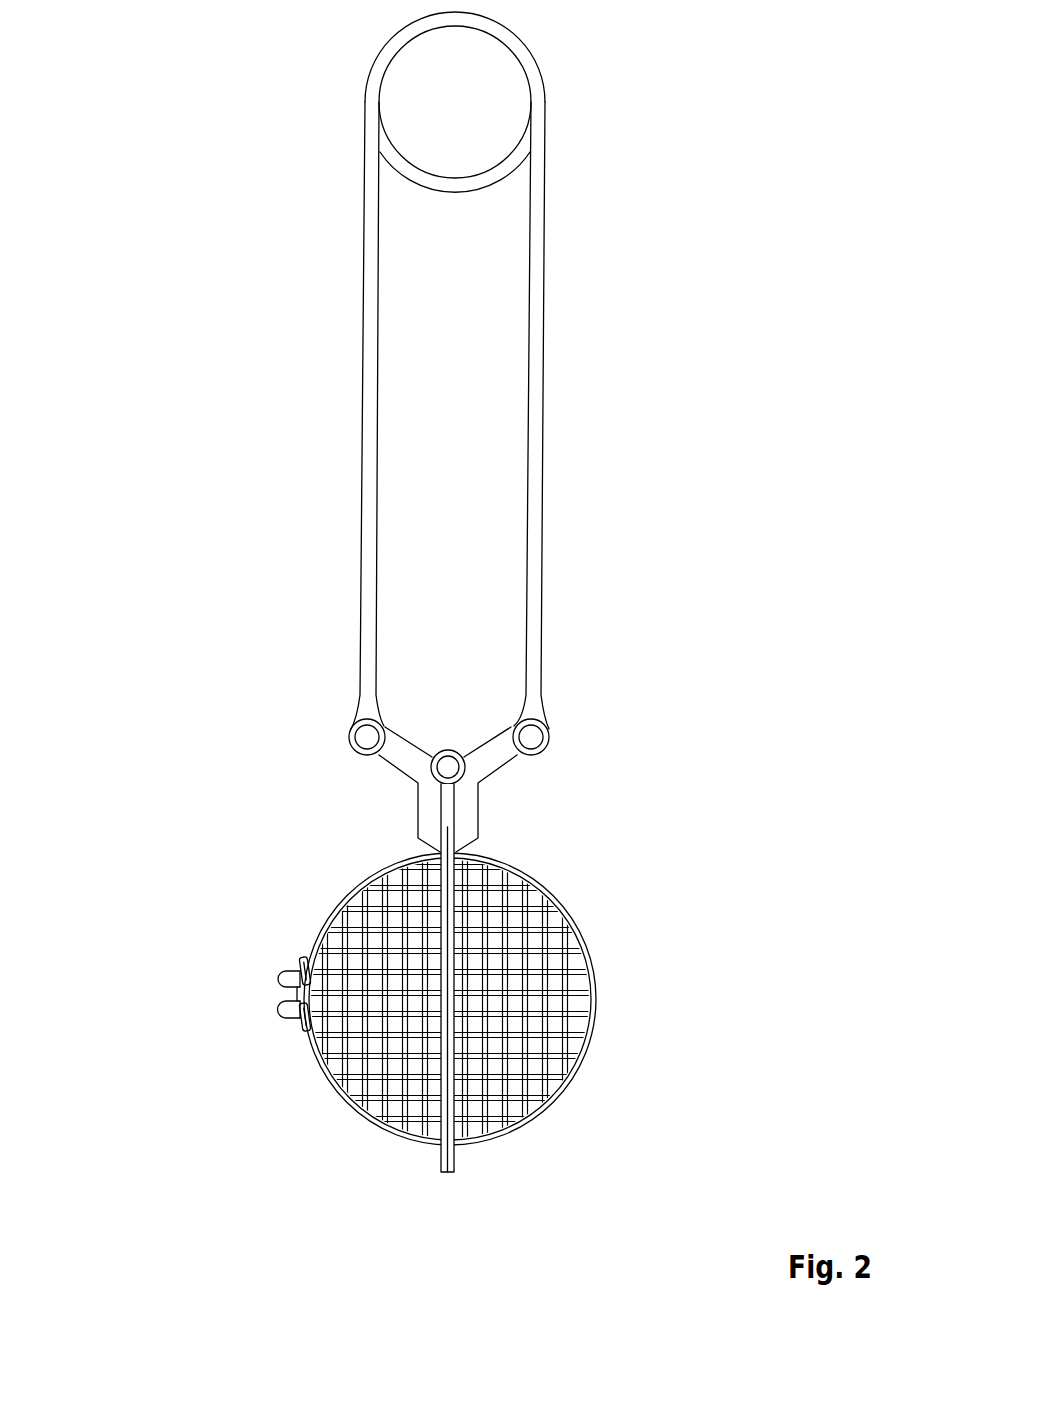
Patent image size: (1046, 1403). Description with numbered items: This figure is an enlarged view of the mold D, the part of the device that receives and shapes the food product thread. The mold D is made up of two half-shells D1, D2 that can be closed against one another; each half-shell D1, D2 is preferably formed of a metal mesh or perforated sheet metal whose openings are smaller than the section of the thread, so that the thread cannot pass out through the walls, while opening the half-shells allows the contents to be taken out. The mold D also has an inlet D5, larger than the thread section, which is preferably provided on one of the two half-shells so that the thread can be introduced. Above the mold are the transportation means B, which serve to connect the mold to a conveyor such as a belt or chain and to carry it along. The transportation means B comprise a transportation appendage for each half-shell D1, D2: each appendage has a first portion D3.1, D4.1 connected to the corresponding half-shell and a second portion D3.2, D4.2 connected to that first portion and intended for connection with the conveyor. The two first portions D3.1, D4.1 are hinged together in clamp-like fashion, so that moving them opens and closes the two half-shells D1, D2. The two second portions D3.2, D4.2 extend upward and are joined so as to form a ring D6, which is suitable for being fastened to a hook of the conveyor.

The transportation means B is at (560, 674).
The mold D is at (521, 1159).
The half-shell D1 is at (415, 1136).
The half-shell D2 is at (582, 1062).
The first portion D3.1 is at (468, 806).
The second portion D3.2 is at (535, 502).
The first portion D4.1 is at (430, 806).
The second portion D4.2 is at (368, 501).
The inlet D5 is at (272, 996).
The ring D6 is at (523, 57).